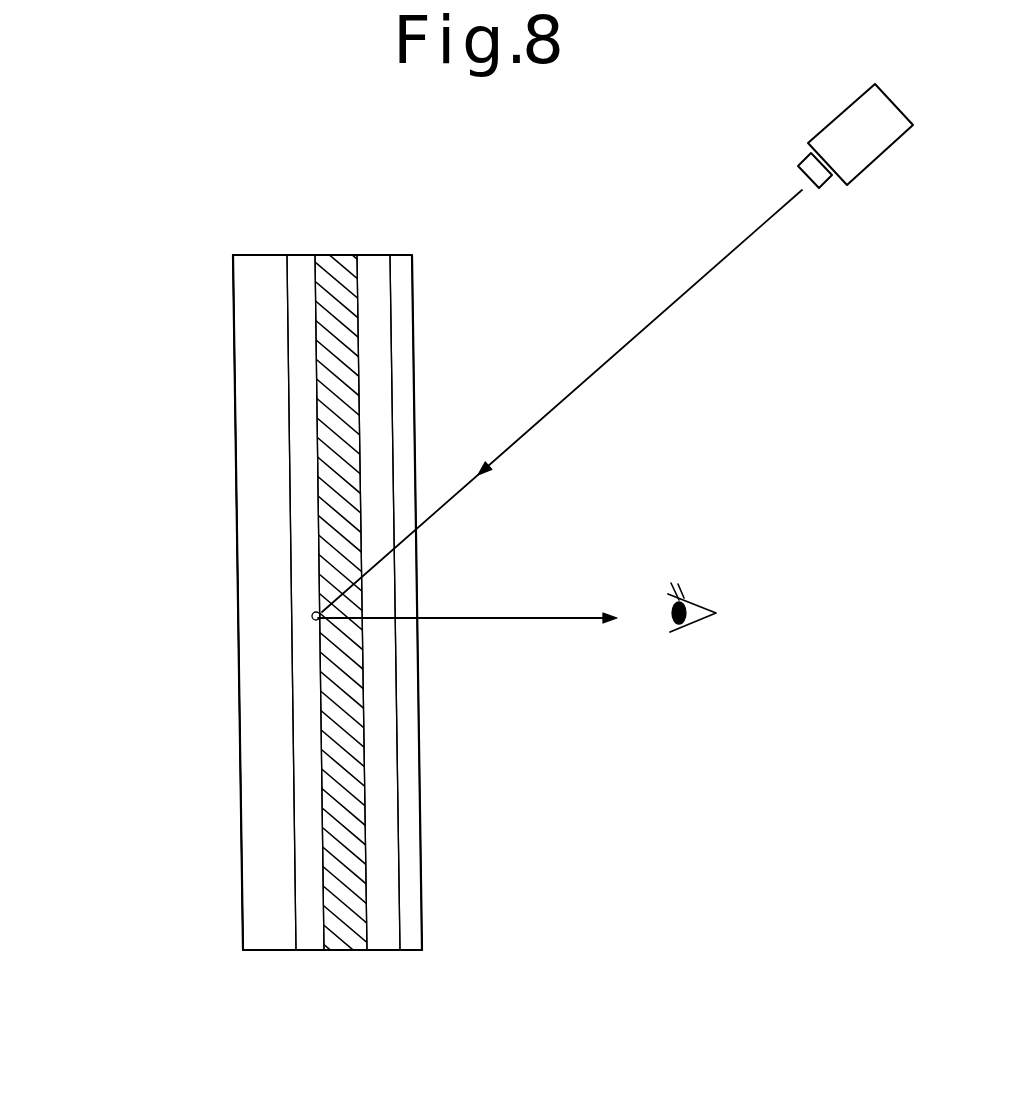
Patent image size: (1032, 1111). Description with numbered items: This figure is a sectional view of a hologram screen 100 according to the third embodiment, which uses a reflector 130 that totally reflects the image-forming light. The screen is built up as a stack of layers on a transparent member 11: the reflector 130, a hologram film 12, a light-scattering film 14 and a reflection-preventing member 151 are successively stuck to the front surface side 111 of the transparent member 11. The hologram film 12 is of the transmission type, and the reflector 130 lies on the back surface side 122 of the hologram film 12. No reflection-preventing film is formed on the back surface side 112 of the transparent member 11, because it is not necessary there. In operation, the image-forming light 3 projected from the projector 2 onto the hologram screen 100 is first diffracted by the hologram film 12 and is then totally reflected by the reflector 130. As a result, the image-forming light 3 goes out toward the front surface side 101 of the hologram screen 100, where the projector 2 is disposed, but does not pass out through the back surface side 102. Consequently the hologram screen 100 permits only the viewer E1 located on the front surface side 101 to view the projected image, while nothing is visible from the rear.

The hologram screen 100 is at (165, 862).
The transparent member 11 is at (253, 312).
The reflector 130 is at (303, 275).
The back surface side of the hologram film 122 is at (313, 378).
The hologram film 12 is at (342, 940).
The light-scattering film 14 is at (373, 275).
The front surface side of the hologram screen 101 is at (413, 378).
The back surface side of the hologram screen 102 is at (233, 465).
The back surface side of the transparent member 112 is at (233, 527).
The front surface side of the transparent member 111 is at (297, 795).
The reflection-preventing member 151 is at (413, 920).
The projector 2 is at (857, 157).
The image-forming light 3 is at (692, 281).
The viewer E1 is at (700, 604).